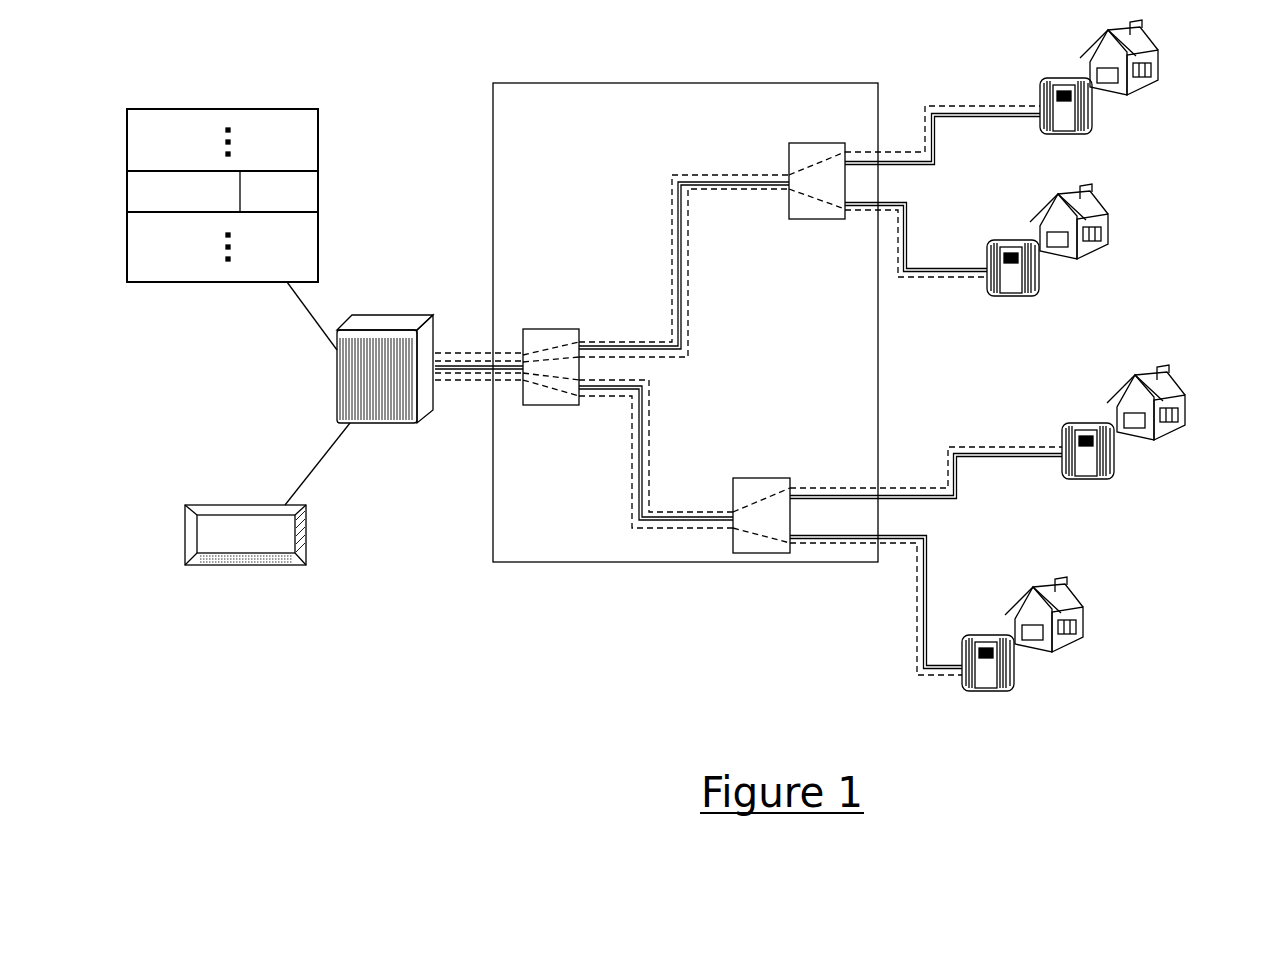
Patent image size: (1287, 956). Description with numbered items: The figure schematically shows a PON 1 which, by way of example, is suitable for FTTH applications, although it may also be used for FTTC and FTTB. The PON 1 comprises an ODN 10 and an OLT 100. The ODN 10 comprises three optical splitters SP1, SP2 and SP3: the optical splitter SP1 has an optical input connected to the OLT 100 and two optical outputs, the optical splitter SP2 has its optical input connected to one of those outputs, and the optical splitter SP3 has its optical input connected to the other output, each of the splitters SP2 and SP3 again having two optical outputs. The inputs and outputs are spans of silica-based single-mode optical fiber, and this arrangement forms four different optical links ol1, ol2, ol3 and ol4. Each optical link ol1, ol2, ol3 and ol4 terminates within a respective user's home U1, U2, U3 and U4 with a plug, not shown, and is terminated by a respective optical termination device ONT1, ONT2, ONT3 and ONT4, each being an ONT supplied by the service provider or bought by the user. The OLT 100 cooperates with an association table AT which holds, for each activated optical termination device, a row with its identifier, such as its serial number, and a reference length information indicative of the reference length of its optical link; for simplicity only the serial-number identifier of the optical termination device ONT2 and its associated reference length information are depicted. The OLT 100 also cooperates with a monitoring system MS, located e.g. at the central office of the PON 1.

The PON 1 is at (546, 40).
The ODN 10 is at (683, 83).
The OLT 100 is at (384, 312).
The association table AT is at (336, 102).
The monitoring system MS is at (307, 532).
The optical splitter SP1 is at (553, 329).
The optical splitter SP2 is at (815, 143).
The optical splitter SP3 is at (763, 478).
The optical link ol1 is at (715, 172).
The optical link ol2 is at (745, 192).
The optical link ol3 is at (650, 450).
The optical link ol4 is at (630, 488).
The optical termination device ONT1 is at (1093, 105).
The optical termination device ONT2 is at (1040, 268).
The optical termination device ONT3 is at (1116, 450).
The optical termination device ONT4 is at (1016, 662).
The user's home U1 is at (1178, 53).
The user's home U2 is at (1128, 217).
The user's home U3 is at (1203, 401).
The user's home U4 is at (1105, 612).